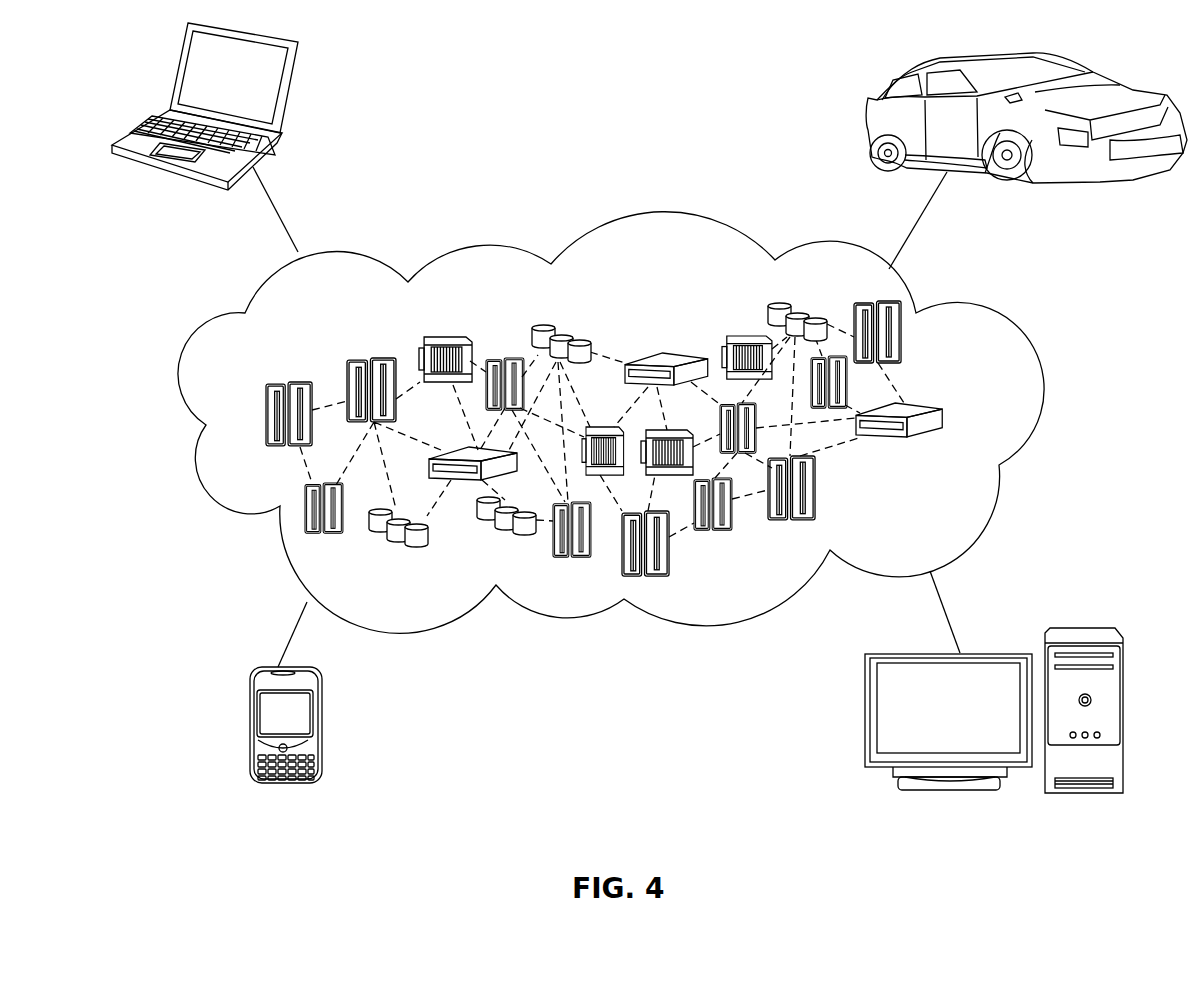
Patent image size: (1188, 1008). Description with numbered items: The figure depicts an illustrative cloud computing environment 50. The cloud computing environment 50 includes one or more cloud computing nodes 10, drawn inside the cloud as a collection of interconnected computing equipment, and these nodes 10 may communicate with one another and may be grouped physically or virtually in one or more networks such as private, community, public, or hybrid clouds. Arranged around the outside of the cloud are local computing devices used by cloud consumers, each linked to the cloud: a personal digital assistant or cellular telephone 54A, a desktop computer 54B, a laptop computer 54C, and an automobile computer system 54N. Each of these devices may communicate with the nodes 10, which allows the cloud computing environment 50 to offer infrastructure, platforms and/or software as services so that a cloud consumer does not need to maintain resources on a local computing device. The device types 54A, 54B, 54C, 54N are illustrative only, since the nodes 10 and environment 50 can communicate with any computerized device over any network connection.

The cloud computing node 10 is at (985, 416).
The cloud computing environment 50 is at (1007, 325).
The personal digital assistant or cellular telephone 54A is at (249, 732).
The desktop computer 54B is at (1088, 628).
The laptop computer 54C is at (293, 92).
The automobile computer system 54N is at (878, 105).